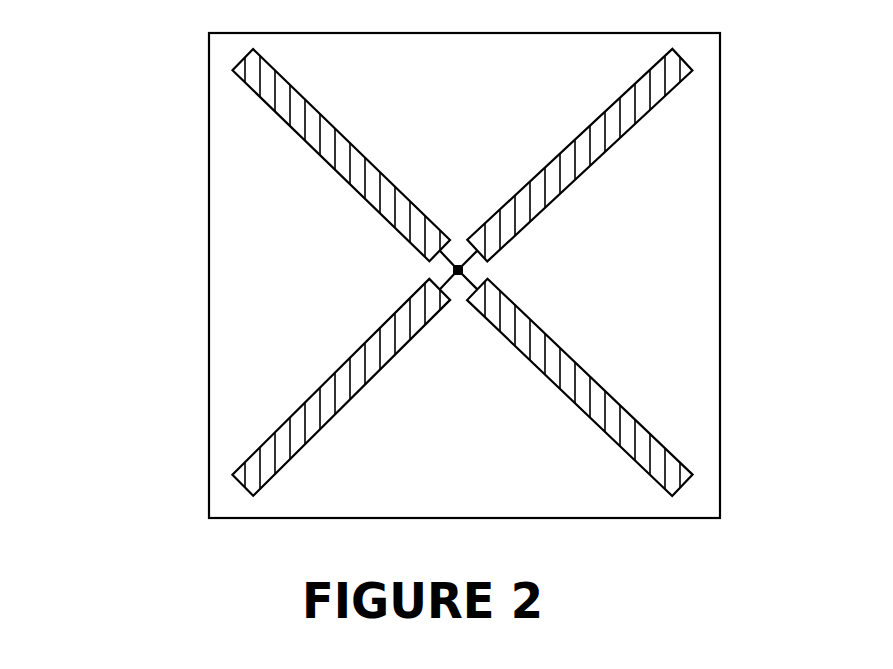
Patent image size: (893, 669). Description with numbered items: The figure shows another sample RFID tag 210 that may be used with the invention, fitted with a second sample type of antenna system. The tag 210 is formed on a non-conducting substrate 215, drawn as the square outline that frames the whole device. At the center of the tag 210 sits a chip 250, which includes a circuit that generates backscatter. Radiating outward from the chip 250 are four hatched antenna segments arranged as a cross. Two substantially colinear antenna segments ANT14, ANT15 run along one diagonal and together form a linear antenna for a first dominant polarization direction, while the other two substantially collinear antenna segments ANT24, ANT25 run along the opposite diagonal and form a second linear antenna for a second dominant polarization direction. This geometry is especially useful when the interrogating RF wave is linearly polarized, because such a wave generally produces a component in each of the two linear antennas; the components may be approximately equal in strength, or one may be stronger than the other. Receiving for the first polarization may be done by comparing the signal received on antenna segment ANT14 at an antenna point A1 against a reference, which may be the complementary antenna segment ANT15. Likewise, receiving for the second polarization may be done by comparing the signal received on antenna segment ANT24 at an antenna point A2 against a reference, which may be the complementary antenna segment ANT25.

The RFID tag 210 is at (137, 103).
The non-conducting substrate 215 is at (720, 80).
The chip 250 is at (458, 265).
The antenna segment ANT14 is at (315, 108).
The antenna segment ANT25 is at (603, 108).
The antenna segment ANT24 is at (323, 422).
The antenna segment ANT15 is at (600, 428).
The antenna point A1 is at (438, 249).
The antenna point A2 is at (436, 297).